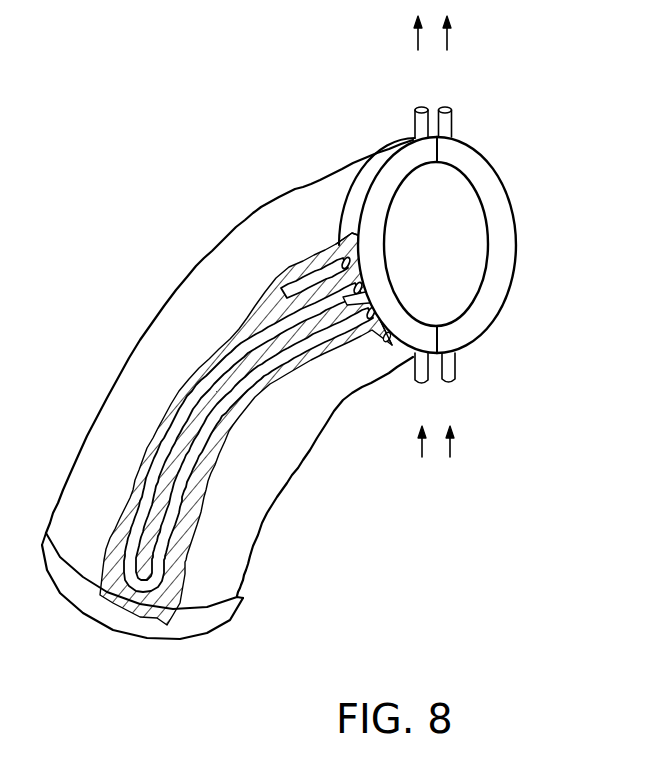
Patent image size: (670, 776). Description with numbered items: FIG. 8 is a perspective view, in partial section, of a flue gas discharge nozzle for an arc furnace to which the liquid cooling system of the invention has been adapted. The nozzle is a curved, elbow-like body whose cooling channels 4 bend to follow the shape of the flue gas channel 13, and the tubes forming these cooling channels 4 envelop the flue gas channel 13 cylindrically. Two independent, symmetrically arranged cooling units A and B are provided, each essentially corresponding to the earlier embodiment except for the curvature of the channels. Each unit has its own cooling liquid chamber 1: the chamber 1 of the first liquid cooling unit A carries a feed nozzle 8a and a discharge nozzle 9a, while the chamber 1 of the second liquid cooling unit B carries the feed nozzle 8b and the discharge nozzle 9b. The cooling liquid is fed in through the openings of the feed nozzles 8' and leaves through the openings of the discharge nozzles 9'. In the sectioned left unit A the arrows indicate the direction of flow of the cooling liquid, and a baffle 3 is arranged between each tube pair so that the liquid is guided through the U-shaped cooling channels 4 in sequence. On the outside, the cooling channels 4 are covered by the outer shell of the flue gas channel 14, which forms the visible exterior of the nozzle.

The cooling liquid chamber 1 is at (373, 173).
The baffle 3 is at (358, 252).
The cooling channels 4 is at (185, 490).
The feed nozzle 8a is at (420, 367).
The feed nozzle 8b is at (447, 370).
The openings of the feed nozzles 8' is at (436, 420).
The discharge nozzle 9a is at (420, 128).
The discharge nozzle 9b is at (450, 130).
The openings of the discharge nozzles 9' is at (432, 61).
The flue gas channel 13 is at (450, 247).
The outer shell of the flue gas channel 14 is at (260, 233).
The first liquid cooling unit A is at (398, 175).
The second liquid cooling unit B is at (482, 178).